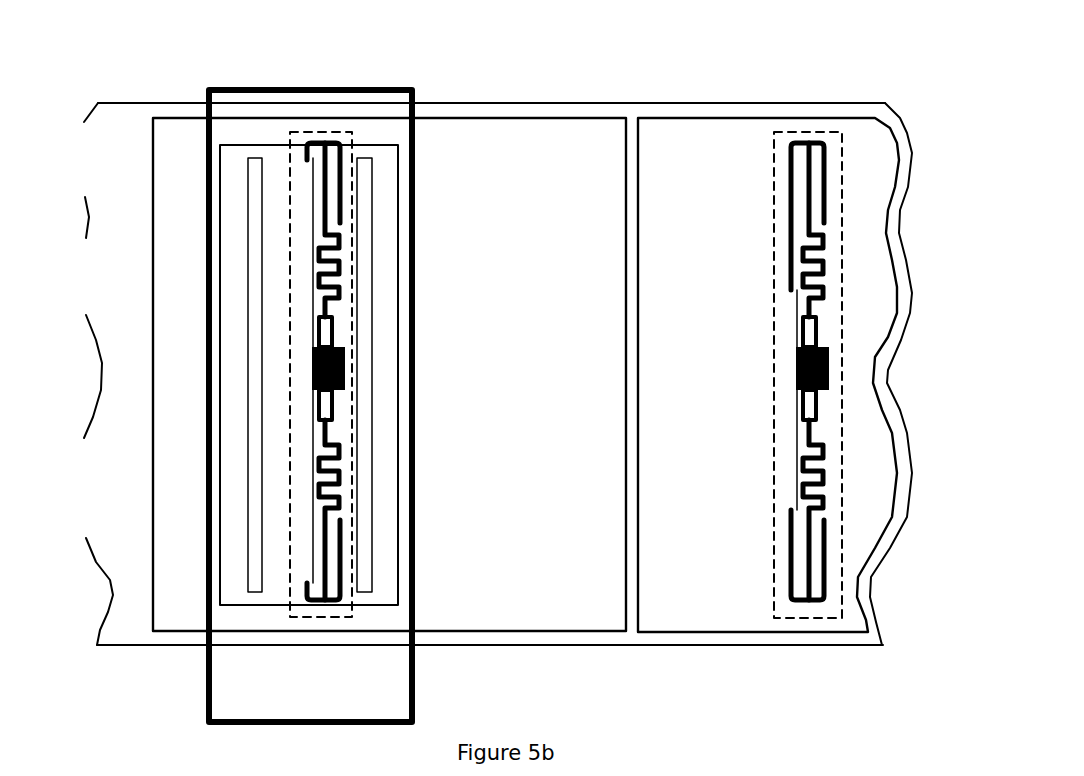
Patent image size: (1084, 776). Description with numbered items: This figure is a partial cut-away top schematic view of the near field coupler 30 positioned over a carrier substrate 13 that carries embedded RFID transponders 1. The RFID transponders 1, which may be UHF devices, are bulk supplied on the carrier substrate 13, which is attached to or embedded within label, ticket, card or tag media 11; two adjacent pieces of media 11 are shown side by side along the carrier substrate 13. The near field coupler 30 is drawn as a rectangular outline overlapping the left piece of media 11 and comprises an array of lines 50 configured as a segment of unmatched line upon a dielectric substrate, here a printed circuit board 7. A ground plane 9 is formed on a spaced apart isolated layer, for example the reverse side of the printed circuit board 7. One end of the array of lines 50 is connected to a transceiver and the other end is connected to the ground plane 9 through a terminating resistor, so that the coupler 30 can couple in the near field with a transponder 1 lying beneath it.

The RFID transponder 1 is at (347, 142).
The printed circuit board 7 is at (413, 672).
The ground plane 9 is at (240, 657).
The label, ticket, card or tag media 11 is at (551, 593).
The carrier substrate 13 is at (610, 103).
The near field coupler 30 is at (280, 78).
The array of lines 50 is at (278, 173).